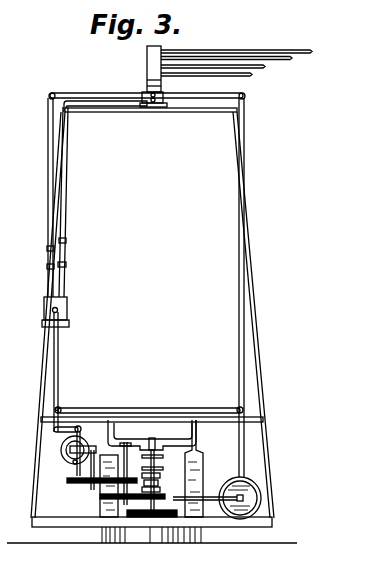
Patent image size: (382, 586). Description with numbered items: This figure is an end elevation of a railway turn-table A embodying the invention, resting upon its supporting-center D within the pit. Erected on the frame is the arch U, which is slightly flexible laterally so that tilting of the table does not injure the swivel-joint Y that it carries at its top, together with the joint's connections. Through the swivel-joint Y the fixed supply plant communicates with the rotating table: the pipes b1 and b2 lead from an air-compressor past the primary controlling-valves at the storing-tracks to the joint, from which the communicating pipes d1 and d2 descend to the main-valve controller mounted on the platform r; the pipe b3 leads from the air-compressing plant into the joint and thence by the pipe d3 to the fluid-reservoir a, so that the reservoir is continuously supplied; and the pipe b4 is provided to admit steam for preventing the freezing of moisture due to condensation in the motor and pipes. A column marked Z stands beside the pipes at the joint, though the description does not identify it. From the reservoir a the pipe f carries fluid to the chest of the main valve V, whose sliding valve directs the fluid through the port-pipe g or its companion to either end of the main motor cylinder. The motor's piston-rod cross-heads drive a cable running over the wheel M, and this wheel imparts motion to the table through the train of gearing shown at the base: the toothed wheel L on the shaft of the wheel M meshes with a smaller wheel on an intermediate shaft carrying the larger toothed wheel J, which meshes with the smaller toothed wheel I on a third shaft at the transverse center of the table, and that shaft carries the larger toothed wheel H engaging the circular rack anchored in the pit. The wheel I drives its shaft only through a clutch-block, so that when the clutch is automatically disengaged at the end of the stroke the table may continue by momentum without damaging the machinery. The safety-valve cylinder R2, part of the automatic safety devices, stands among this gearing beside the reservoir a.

The arch U is at (212, 112).
The pipe d3 is at (247, 118).
The communicating pipe d1 is at (48, 213).
The communicating pipe d2 is at (66, 228).
The column Z is at (147, 58).
The pipe b1 is at (312, 52).
The pipe b2 is at (293, 59).
The communicating pipe b3 is at (266, 68).
The pipe b4 is at (253, 75).
The swivel-joint Y is at (165, 107).
The main valve V is at (44, 308).
The platform r is at (69, 325).
The pipe f is at (58, 360).
The port-pipe g is at (53, 431).
The wheel M is at (62, 460).
The toothed wheel L is at (67, 480).
The toothed wheel J is at (100, 497).
The turn-table A is at (203, 457).
The safety-valve cylinder R2 is at (163, 466).
The toothed wheel I is at (160, 498).
The fluid-reservoir a is at (259, 486).
The supporting-center D is at (143, 536).
The toothed wheel H is at (190, 514).